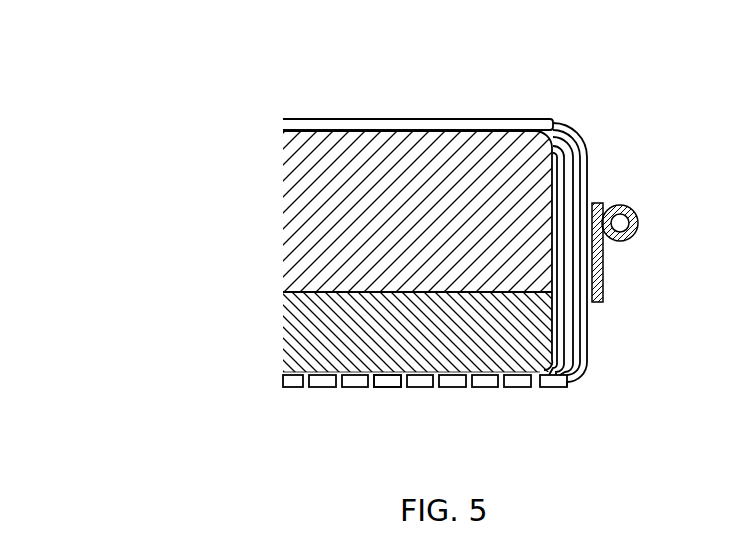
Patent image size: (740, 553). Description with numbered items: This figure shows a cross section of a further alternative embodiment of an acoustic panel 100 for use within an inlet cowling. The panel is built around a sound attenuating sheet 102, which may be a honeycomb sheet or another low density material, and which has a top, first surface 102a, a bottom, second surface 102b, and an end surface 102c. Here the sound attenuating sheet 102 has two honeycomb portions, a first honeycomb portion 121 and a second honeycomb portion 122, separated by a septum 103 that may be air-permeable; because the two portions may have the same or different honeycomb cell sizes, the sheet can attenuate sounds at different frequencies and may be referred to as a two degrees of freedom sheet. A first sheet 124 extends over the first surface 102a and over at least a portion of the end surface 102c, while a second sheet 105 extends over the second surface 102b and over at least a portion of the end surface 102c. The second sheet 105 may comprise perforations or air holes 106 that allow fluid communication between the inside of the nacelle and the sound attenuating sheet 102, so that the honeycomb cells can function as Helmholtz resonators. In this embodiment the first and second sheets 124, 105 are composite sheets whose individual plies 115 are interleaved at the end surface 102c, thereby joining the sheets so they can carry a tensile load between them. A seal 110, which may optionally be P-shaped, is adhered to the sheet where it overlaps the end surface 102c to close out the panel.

The acoustic panel 100 is at (132, 92).
The sound attenuating sheet 102 is at (167, 260).
The first surface 102a is at (336, 132).
The second surface 102b is at (290, 367).
The end surface 102c is at (548, 388).
The septum 103 is at (285, 291).
The second sheet 105 is at (356, 390).
The air holes 106 is at (438, 390).
The seal 110 is at (620, 242).
The plies 115 is at (590, 325).
The first honeycomb portion 121 is at (285, 229).
The second honeycomb portion 122 is at (285, 326).
The first sheet 124 is at (450, 118).